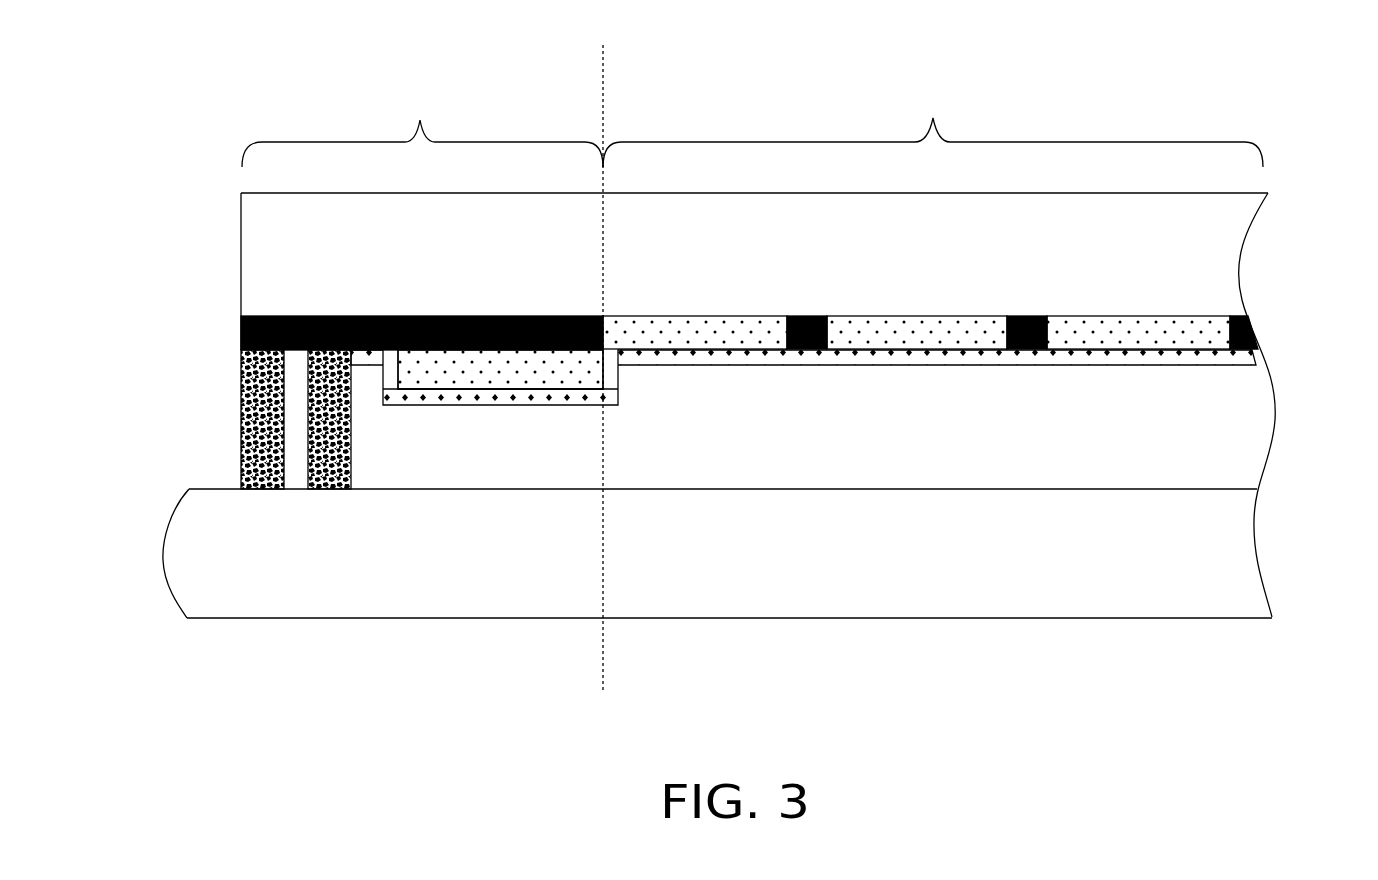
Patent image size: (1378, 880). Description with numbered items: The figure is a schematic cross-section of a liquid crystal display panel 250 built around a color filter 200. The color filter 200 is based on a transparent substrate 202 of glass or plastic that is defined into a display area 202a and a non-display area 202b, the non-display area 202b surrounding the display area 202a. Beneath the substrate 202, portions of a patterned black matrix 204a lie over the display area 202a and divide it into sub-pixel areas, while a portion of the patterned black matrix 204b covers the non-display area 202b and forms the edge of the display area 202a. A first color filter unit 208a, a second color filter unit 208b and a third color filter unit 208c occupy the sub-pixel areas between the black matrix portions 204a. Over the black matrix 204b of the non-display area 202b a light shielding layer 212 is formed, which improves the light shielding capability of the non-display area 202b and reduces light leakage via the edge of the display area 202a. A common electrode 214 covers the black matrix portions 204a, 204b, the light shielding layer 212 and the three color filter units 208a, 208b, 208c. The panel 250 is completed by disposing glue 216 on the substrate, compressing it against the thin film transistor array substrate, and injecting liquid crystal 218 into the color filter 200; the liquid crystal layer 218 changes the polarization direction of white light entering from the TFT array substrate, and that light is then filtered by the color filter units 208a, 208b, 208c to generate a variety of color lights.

The color filter 200 is at (213, 258).
The substrate 202 is at (1217, 263).
The display area 202a is at (933, 119).
The non-display area 202b is at (422, 117).
The patterned black matrix portions 204a is at (1253, 331).
The patterned black matrix portion 204b is at (241, 330).
The first color filter unit 208a is at (933, 333).
The second color filter unit 208b is at (675, 332).
The third color filter unit 208c is at (1120, 328).
The light shielding layer 212 is at (457, 368).
The common electrode 214 is at (1213, 361).
The glue 216 is at (241, 398).
The liquid crystal layer 218 is at (1215, 438).
The liquid crystal display panel 250 is at (1229, 738).